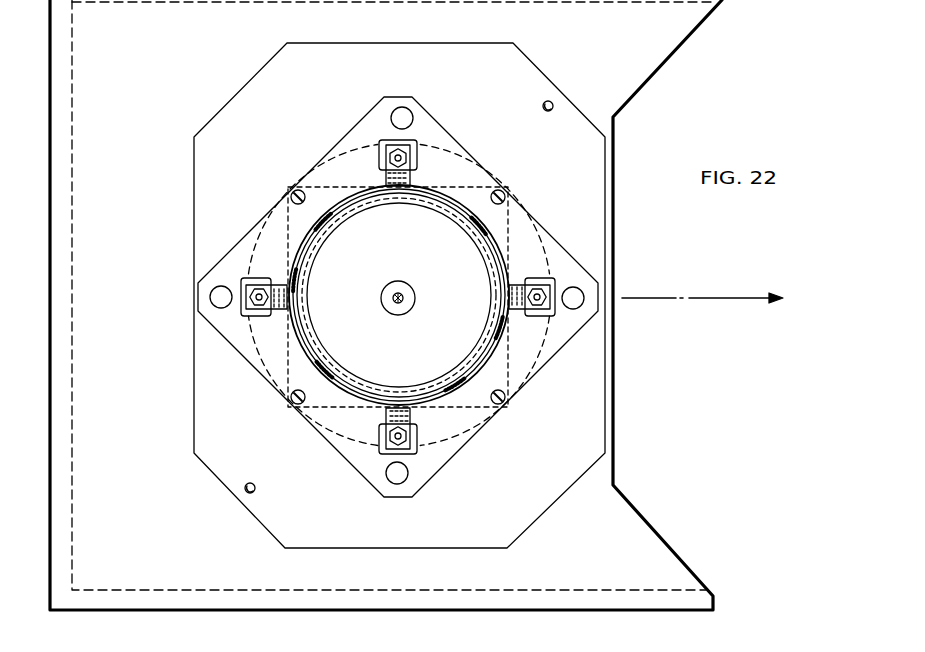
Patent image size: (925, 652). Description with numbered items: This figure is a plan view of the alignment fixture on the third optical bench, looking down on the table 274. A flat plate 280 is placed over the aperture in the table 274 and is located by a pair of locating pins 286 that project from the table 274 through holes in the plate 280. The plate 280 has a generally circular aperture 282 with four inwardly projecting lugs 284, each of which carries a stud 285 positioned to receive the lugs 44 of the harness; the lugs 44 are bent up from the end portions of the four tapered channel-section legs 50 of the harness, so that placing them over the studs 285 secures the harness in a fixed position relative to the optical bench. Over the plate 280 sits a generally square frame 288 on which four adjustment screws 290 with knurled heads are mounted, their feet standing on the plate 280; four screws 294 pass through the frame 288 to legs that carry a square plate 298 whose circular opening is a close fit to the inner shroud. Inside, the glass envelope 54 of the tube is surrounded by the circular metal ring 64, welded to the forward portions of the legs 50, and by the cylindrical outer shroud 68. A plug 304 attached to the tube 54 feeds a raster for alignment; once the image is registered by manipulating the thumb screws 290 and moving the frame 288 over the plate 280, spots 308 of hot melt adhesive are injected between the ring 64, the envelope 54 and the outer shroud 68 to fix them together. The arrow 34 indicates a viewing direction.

The table 274 is at (153, 58).
The flat plate 280 is at (331, 43).
The square frame 288 is at (421, 106).
The adjustment screws 290 is at (393, 111).
The locating pins 286 is at (553, 104).
The circular aperture 282 is at (457, 146).
The plate 298 is at (316, 415).
The lugs 284 is at (381, 152).
The studs 285 is at (405, 155).
The lugs 44 is at (531, 339).
The screws 294 is at (293, 193).
The outer shroud 68 is at (507, 263).
The spots of hot melt adhesive 308 is at (458, 386).
The legs 50 is at (296, 277).
The ring 64 is at (307, 258).
The glass envelope 54 is at (410, 351).
The plug 304 is at (411, 289).
The axis arrow 34 is at (707, 298).